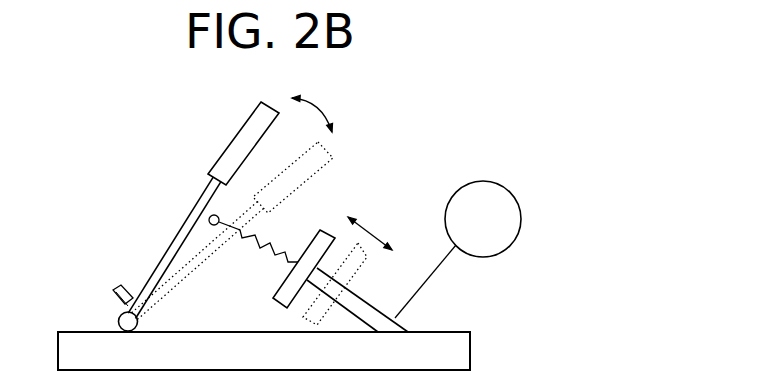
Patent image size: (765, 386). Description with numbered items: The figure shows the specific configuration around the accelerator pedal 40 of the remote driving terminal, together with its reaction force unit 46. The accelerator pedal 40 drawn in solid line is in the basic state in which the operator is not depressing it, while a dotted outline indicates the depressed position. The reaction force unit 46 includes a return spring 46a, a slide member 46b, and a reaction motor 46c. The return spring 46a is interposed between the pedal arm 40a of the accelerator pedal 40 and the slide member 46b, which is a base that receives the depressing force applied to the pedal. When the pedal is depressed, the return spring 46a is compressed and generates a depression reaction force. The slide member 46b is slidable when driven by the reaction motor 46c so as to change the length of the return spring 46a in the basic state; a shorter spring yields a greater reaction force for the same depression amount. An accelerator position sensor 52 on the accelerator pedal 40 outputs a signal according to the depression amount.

The accelerator pedal 40 is at (222, 124).
The pedal arm 40a is at (183, 227).
The accelerator position sensor 52 is at (118, 288).
The reaction force unit 46 is at (545, 113).
The return spring 46a is at (273, 238).
The slide member 46b is at (323, 230).
The reaction motor 46c is at (483, 181).